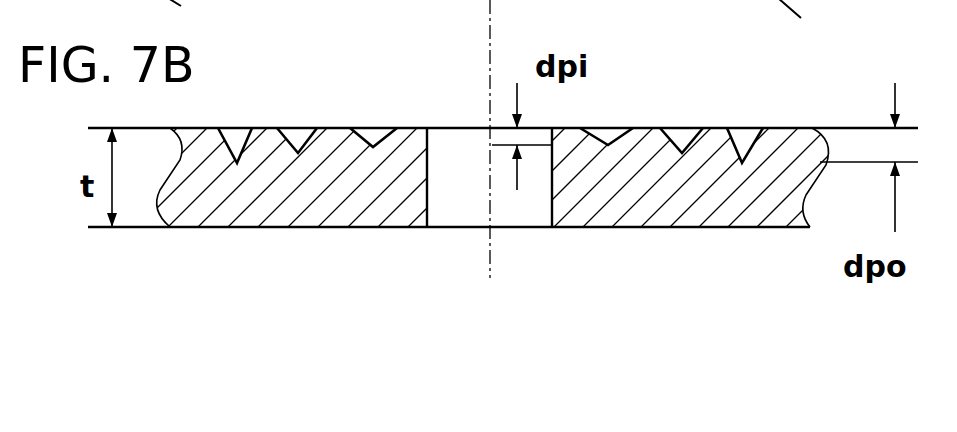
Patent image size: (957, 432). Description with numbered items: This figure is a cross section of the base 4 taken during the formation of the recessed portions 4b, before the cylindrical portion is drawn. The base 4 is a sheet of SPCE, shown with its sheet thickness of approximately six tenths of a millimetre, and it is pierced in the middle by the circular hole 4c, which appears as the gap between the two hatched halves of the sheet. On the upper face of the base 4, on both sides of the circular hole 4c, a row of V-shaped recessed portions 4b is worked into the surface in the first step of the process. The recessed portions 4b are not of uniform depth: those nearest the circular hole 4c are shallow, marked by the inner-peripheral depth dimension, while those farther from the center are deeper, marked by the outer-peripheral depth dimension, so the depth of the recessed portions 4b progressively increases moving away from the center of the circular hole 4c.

The base 4 is at (293, 193).
The recessed portions 4b is at (237, 138).
The circular hole 4c is at (452, 228).